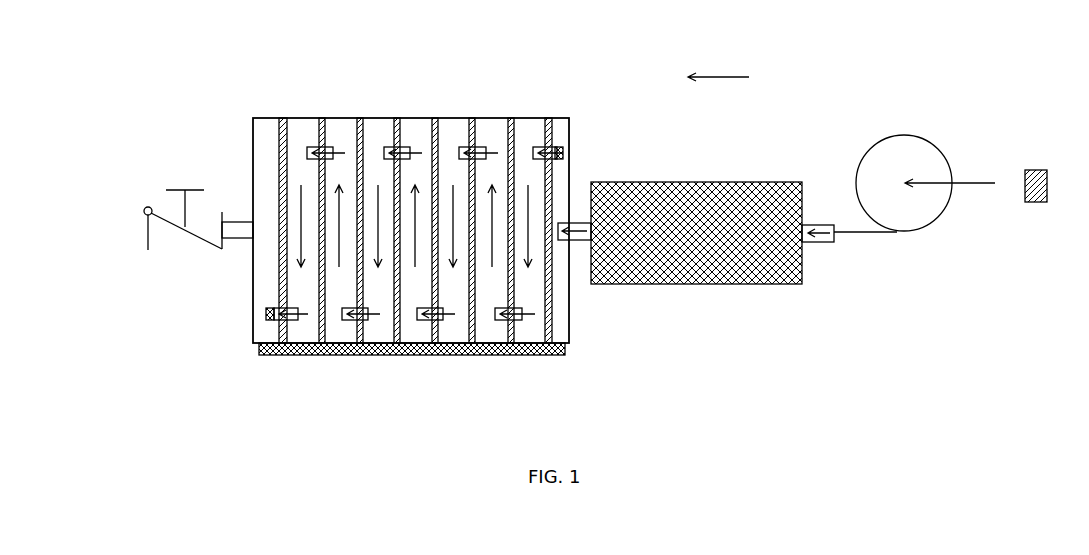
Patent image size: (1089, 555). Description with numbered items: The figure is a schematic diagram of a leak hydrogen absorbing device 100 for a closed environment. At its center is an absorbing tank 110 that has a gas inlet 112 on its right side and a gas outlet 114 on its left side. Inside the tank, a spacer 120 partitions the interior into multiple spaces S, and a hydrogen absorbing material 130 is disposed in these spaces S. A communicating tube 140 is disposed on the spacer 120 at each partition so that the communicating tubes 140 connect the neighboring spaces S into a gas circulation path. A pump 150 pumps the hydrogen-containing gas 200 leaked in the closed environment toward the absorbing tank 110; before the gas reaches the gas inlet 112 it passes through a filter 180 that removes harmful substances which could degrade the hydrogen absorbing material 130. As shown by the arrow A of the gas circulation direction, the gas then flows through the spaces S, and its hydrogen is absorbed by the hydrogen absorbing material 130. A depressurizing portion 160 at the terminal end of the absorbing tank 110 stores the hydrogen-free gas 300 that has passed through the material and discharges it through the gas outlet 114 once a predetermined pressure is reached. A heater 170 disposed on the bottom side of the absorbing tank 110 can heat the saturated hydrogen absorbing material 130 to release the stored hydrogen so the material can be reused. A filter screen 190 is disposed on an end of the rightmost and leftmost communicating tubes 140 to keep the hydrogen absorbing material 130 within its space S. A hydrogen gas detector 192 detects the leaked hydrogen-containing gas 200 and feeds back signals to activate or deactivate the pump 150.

The leak hydrogen absorbing device 100 is at (927, 381).
The absorbing tank 110 is at (578, 311).
The gas inlet 112 is at (575, 222).
The gas outlet 114 is at (243, 221).
The spacer 120 is at (284, 118).
The hydrogen absorbing material 130 is at (418, 293).
The communicating tube 140 is at (408, 147).
The pump 150 is at (905, 220).
The depressurizing portion 160 is at (185, 258).
The heater 170 is at (453, 352).
The filter 180 is at (748, 197).
The filter screen 190 is at (558, 147).
The hydrogen gas detector 192 is at (1036, 196).
The hydrogen-containing gas 200 is at (980, 183).
The hydrogen-free gas 300 is at (271, 142).
The spaces S is at (346, 341).
The arrow of gas circulation direction A is at (725, 77).